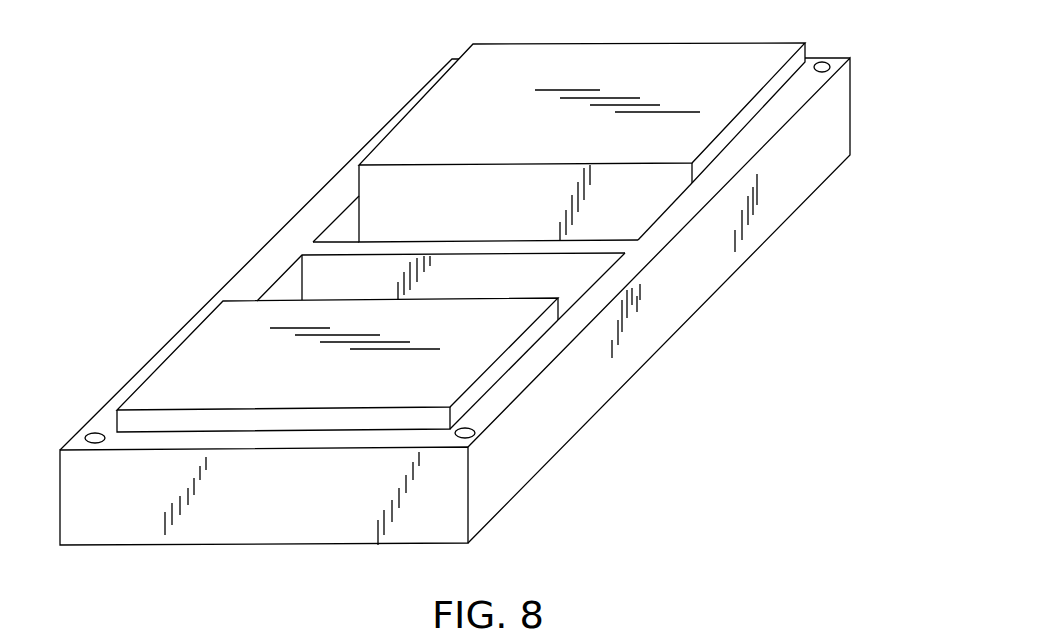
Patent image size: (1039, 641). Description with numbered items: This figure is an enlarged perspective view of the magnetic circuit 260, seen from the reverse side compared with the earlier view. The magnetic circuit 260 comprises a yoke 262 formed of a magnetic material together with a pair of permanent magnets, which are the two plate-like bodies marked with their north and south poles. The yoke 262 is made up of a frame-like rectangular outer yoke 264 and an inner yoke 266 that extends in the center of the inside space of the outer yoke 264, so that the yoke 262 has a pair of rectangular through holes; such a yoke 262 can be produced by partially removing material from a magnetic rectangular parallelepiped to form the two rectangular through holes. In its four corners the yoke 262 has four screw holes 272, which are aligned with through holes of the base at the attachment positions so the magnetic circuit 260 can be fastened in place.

The magnetic circuit 260 is at (308, 153).
The yoke 262 is at (797, 205).
The outer yoke 264 is at (512, 485).
The inner yoke 266 is at (573, 250).
The screw holes 272 is at (822, 62).